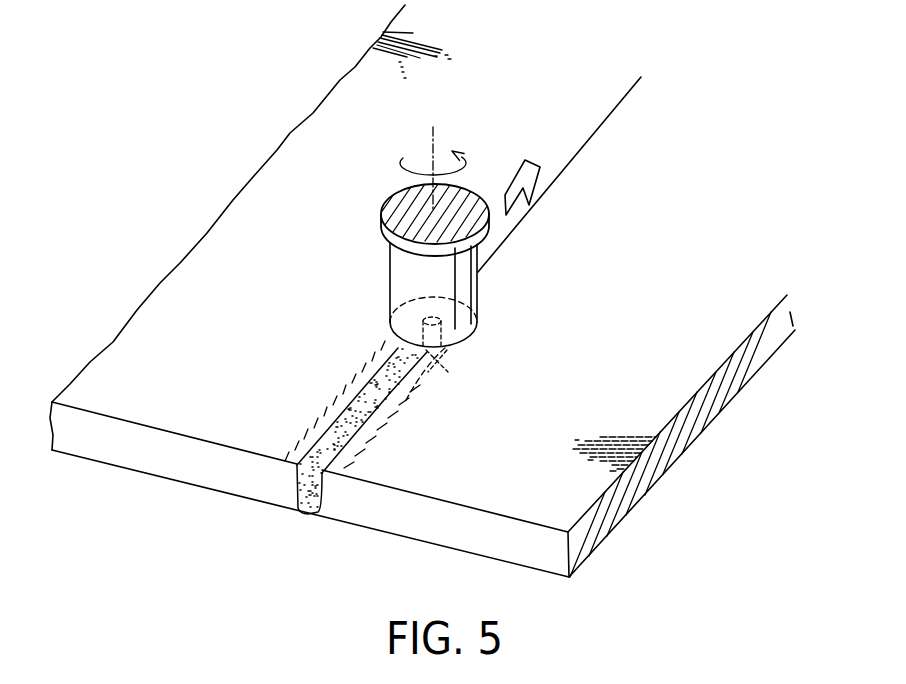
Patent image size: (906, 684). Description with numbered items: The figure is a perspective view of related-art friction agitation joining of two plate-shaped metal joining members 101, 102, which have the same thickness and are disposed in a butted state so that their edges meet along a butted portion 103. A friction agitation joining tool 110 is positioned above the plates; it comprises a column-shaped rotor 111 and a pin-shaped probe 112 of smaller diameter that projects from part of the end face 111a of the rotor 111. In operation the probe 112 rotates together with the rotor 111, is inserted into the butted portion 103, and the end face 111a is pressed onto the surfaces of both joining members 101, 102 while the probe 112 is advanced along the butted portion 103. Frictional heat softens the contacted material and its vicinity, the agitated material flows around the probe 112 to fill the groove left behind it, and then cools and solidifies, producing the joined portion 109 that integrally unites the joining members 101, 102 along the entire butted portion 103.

The joining member 101 is at (623, 362).
The joining member 102 is at (252, 230).
The butted portion 103 is at (575, 157).
The joined portion 109 is at (360, 413).
The friction agitation joining tool 110 is at (440, 264).
The rotor 111 is at (402, 270).
The end face 111a is at (440, 356).
The probe 112 is at (432, 355).